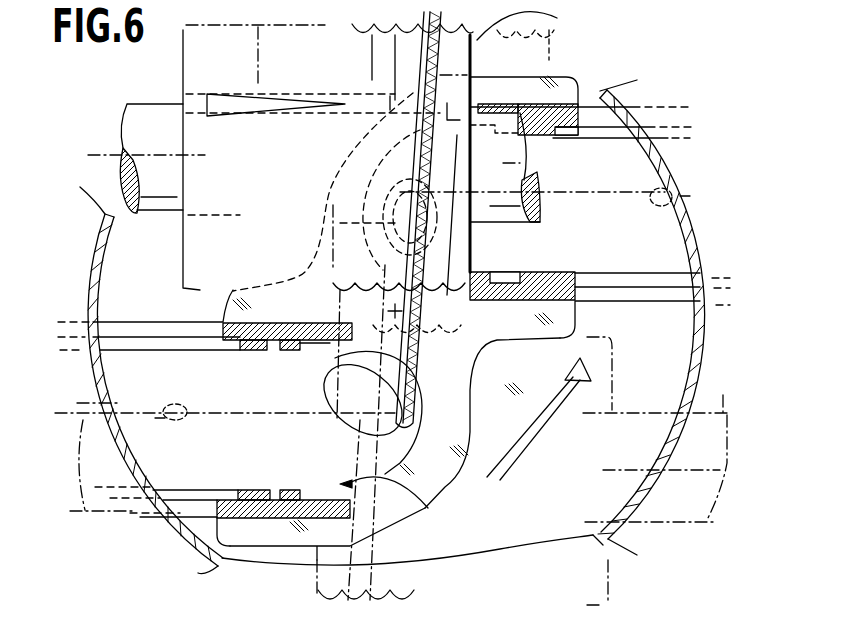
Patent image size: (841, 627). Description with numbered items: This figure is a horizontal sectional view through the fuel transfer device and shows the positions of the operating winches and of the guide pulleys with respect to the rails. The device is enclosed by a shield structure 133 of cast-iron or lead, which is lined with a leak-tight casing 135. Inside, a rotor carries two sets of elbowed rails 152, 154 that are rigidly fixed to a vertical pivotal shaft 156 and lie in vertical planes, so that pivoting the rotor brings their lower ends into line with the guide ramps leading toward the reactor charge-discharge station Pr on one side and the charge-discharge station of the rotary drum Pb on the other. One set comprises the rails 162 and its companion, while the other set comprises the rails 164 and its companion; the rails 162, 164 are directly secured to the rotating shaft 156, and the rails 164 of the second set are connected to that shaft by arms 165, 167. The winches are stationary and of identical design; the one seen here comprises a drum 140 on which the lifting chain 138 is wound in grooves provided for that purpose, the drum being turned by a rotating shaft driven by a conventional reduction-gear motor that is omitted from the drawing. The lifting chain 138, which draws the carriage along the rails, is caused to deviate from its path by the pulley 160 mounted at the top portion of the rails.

The shield structure 133 is at (77, 274).
The leak-tight casing 135 is at (664, 178).
The lifting chain 138 is at (425, 72).
The drum 140 is at (463, 303).
The set of elbowed rails 152 is at (426, 507).
The set of rails 154 is at (540, 233).
The vertical pivotal shaft 156 is at (400, 309).
The pulley 160 is at (328, 386).
The rail 162 is at (237, 345).
The rail 164 is at (552, 274).
The arm 165 is at (495, 430).
The arm 167 is at (335, 172).
The charge-discharge station of the rotary drum Pb is at (143, 411).
The reactor charge-discharge station Pr is at (701, 204).